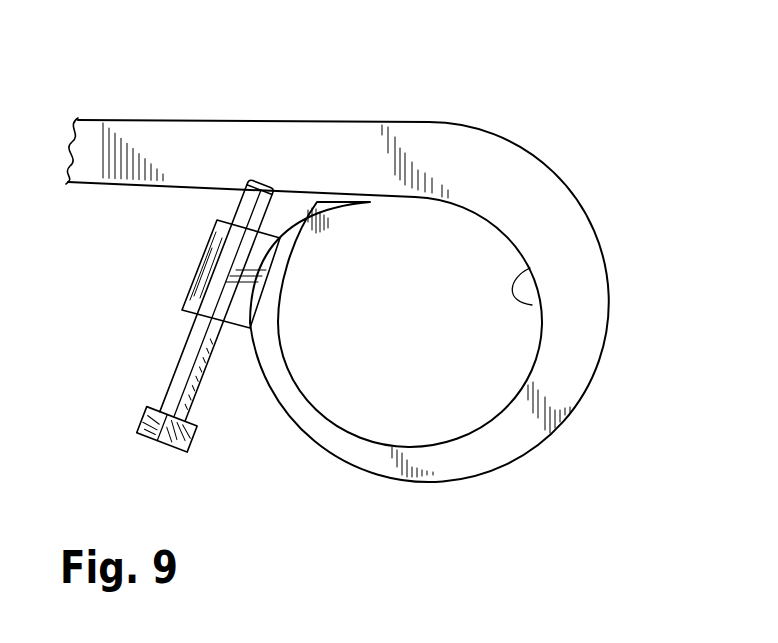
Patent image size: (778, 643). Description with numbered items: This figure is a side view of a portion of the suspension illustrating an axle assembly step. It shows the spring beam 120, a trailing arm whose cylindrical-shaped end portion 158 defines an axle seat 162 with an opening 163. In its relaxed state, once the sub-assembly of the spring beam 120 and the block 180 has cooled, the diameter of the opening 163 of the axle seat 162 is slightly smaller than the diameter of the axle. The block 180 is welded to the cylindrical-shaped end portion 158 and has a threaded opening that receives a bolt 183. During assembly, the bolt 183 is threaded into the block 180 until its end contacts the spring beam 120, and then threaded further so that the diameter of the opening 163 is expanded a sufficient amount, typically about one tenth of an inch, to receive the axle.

The spring beam 120 is at (98, 118).
The cylindrical-shaped end portion 158 is at (552, 172).
The axle seat 162 is at (532, 305).
The opening 163 is at (414, 303).
The block 180 is at (235, 337).
The bolt 183 is at (145, 412).